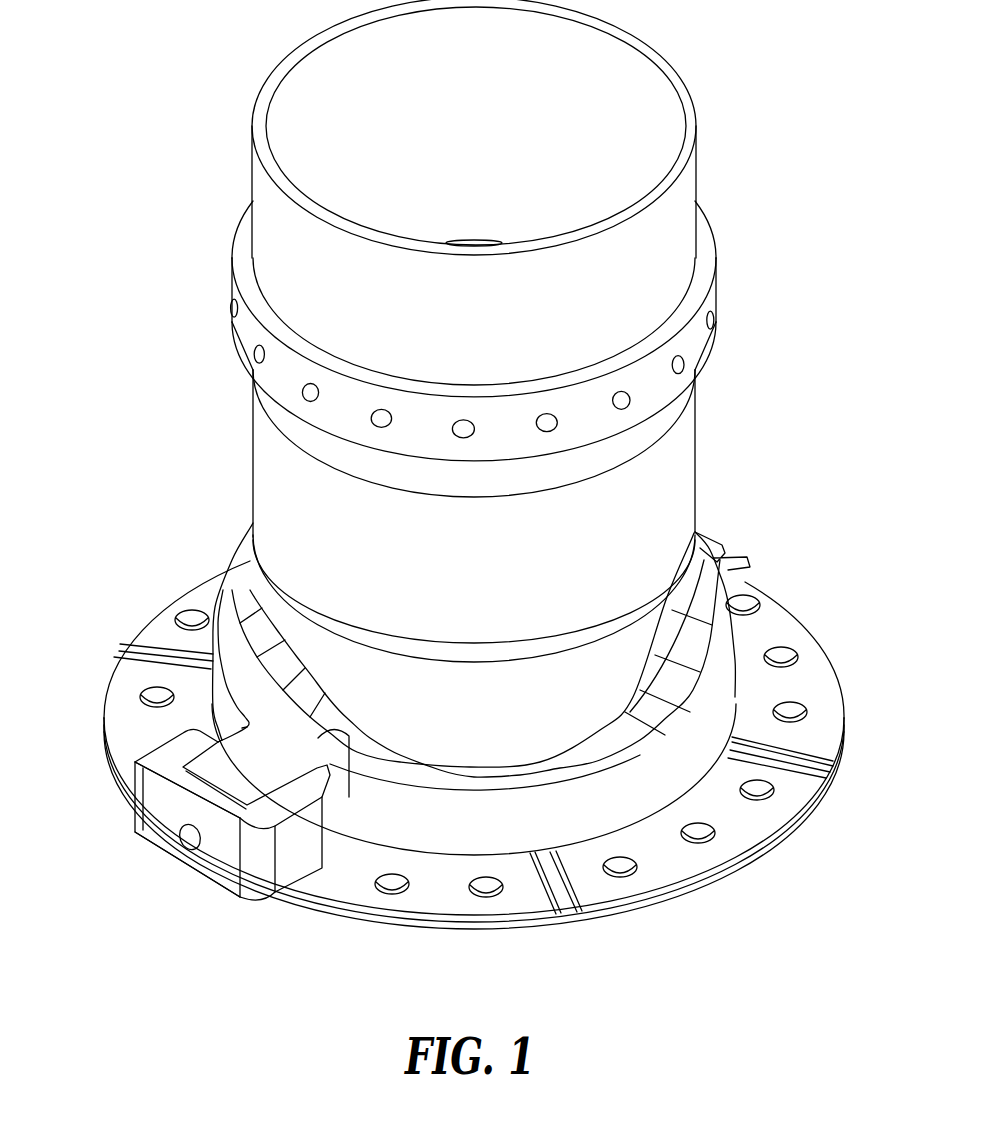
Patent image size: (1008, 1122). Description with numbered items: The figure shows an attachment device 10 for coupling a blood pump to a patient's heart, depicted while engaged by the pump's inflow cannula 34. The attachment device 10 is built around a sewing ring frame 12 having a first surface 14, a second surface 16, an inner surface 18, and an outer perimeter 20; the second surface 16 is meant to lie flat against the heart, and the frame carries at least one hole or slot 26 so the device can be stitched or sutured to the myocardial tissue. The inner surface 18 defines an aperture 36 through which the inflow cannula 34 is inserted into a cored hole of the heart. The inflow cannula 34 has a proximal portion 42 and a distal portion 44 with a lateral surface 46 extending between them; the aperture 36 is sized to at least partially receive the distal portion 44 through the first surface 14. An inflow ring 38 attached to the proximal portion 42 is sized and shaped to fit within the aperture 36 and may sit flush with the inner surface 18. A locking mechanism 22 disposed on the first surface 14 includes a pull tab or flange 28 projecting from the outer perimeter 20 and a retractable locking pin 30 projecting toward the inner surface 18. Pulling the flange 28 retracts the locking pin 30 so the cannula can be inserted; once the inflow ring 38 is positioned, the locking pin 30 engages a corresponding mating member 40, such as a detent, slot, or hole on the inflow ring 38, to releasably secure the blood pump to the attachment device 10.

The attachment device 10 is at (110, 907).
The sewing ring frame 12 is at (108, 718).
The first surface 14 is at (125, 697).
The second surface 16 is at (130, 785).
The inner surface 18 is at (232, 585).
The outer perimeter 20 is at (150, 622).
The locking mechanism 22 is at (266, 900).
The hole or slot 26 is at (706, 821).
The pull tab or flange 28 is at (165, 838).
The retractable locking pin 30 is at (186, 841).
The inflow cannula 34 is at (720, 595).
The aperture 36 is at (348, 748).
The inflow ring 38 is at (246, 333).
The corresponding mating member 40 is at (627, 405).
The proximal portion 42 is at (251, 182).
The distal portion 44 is at (622, 704).
The lateral surface 46 is at (697, 487).